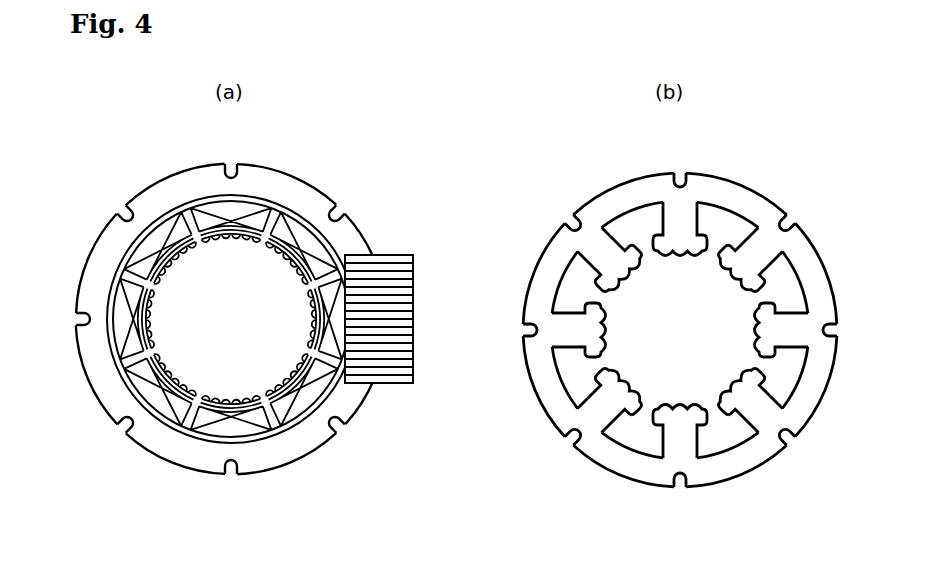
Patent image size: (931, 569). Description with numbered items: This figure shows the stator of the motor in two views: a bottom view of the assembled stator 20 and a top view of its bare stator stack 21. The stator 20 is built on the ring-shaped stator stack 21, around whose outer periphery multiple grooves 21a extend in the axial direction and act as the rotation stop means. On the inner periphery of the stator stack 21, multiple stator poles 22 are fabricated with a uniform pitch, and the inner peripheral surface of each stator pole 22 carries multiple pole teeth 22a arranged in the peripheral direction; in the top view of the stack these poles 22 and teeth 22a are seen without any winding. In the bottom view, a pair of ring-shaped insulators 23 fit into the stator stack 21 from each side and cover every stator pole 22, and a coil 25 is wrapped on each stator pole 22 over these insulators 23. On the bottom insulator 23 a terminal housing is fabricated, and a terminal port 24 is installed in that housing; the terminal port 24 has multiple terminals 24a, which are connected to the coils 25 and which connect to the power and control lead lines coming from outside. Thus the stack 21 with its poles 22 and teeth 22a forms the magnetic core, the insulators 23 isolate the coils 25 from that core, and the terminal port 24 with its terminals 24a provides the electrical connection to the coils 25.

The stator 20 is at (124, 186).
The stator stack 21 is at (85, 260).
The grooves 21a is at (75, 318).
The stator poles 22 is at (161, 325).
The pole teeth 22a is at (244, 236).
The insulators 23 is at (402, 257).
The terminal port 24 is at (383, 257).
The terminals 24a is at (368, 370).
The coil 25 is at (277, 211).